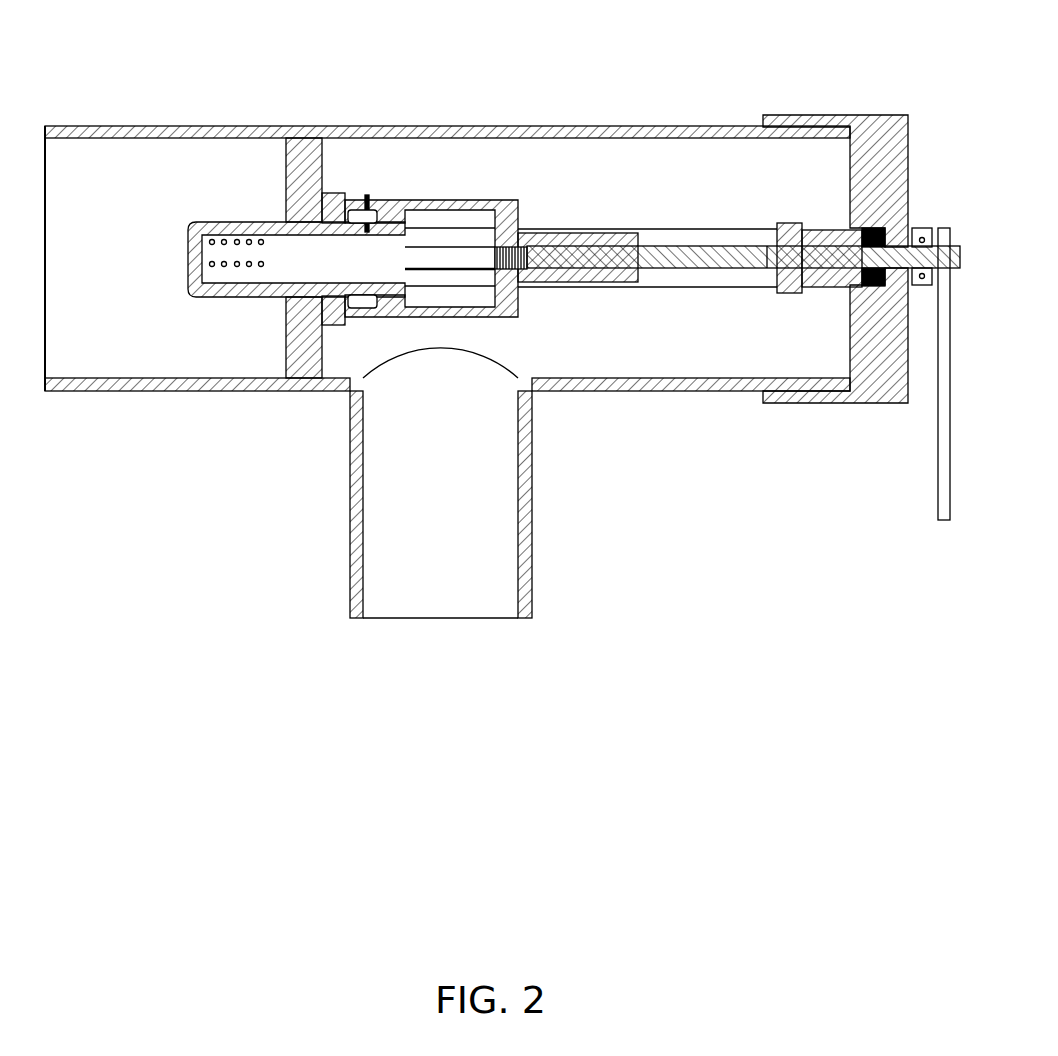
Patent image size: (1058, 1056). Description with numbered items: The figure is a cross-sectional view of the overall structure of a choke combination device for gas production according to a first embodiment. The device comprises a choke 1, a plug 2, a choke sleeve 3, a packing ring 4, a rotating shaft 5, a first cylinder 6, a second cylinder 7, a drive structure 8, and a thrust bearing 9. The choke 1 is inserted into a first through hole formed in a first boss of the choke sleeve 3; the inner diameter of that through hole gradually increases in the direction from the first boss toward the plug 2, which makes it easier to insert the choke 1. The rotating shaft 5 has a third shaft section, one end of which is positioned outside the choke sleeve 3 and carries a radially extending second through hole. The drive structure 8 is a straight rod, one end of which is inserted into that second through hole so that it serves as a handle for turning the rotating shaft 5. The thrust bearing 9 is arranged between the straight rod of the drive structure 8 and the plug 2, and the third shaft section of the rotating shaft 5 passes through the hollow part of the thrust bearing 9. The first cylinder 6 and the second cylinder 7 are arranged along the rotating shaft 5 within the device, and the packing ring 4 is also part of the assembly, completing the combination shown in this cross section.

The choke 1 is at (228, 228).
The plug 2 is at (885, 188).
The choke sleeve 3 is at (487, 130).
The packing ring 4 is at (860, 228).
The rotating shaft 5 is at (713, 273).
The first cylinder 6 is at (507, 285).
The second cylinder 7 is at (777, 293).
The drive structure 8 is at (943, 413).
The thrust bearing 9 is at (921, 228).